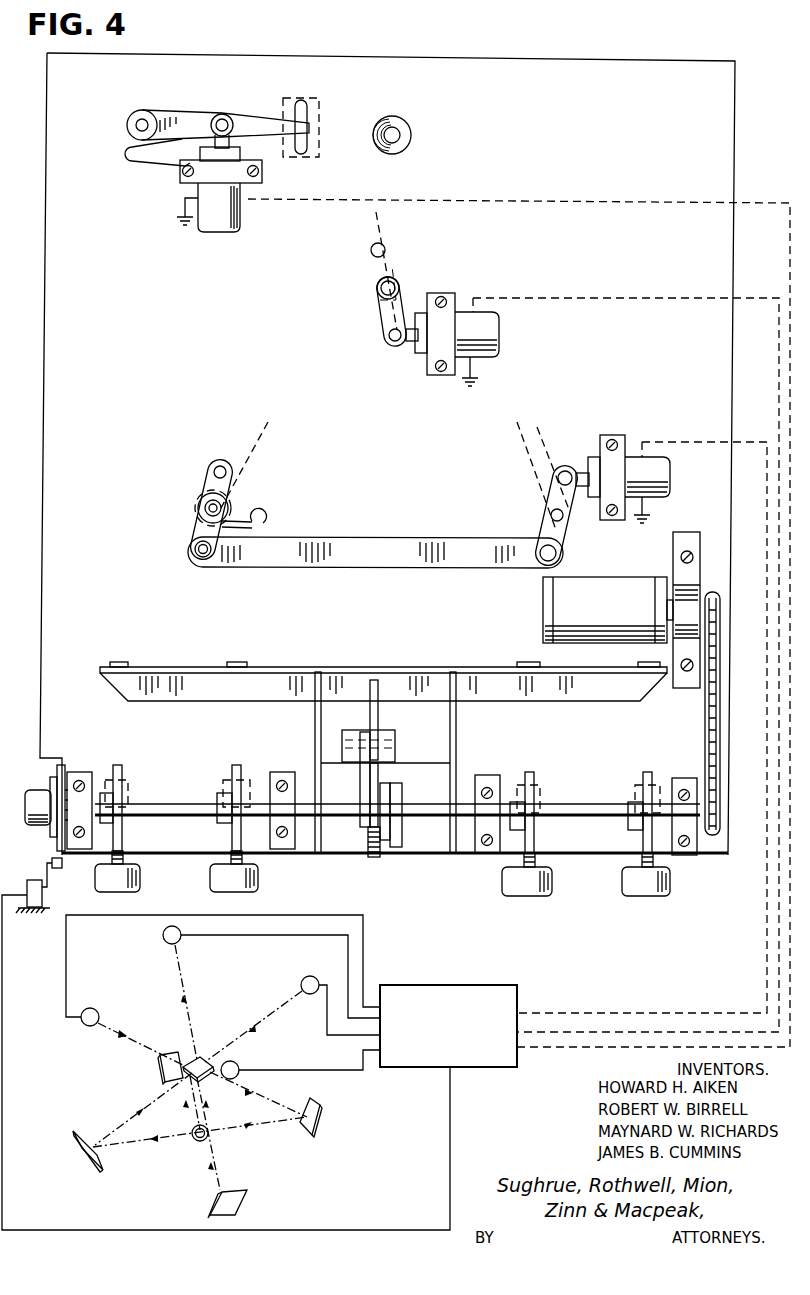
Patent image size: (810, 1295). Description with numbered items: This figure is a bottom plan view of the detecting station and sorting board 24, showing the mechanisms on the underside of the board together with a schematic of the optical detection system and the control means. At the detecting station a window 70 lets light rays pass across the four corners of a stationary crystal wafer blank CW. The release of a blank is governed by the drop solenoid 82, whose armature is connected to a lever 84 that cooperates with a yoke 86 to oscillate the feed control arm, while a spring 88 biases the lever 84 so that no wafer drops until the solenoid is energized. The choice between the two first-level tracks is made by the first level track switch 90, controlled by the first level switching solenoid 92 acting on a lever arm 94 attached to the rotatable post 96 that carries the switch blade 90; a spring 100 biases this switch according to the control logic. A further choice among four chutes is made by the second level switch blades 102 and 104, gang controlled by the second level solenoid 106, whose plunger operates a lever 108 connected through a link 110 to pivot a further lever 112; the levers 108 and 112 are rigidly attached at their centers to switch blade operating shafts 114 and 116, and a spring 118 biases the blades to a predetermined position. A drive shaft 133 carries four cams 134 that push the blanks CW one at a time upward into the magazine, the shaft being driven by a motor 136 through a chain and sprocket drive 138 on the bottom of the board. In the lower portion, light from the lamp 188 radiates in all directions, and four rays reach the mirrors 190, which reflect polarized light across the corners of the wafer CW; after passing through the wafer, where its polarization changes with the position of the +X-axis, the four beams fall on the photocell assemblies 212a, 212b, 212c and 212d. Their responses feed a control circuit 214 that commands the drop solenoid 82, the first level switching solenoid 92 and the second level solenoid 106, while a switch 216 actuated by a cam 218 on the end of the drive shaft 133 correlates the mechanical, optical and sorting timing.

The board 24 is at (648, 156).
The window 70 is at (396, 133).
The drop solenoid 82 is at (240, 217).
The lever 84 is at (262, 118).
The yoke 86 is at (305, 114).
The spring 88 is at (157, 167).
The first level track switch 90 is at (393, 272).
The first level switching solenoid 92 is at (484, 338).
The lever arm 94 is at (406, 302).
The rotatable post 96 is at (378, 289).
The spring 100 is at (385, 245).
The second level switch blade 102 is at (247, 461).
The second level switch blade 104 is at (547, 470).
The second level solenoid 106 is at (655, 482).
The lever 108 is at (568, 530).
The link 110 is at (440, 536).
The lever 112 is at (197, 530).
The switch blade operating shaft 114 is at (221, 506).
The switch blade operating shaft 116 is at (551, 515).
The spring 118 is at (264, 524).
The drive shaft 133 is at (165, 806).
The cams 134 is at (121, 768).
The motor 136 is at (547, 610).
The chain and sprocket drive 138 is at (718, 740).
The lamp 188 is at (195, 1141).
The mirrors 190 is at (158, 1070).
The photocell assembly 212a is at (100, 1011).
The photocell assembly 212b is at (181, 942).
The photocell assembly 212c is at (302, 982).
The photocell assembly 212d is at (240, 1066).
The control circuit 214 is at (444, 985).
The switch 216 is at (42, 900).
The cam 218 is at (57, 844).
The crystal wafer blank CW is at (201, 1060).